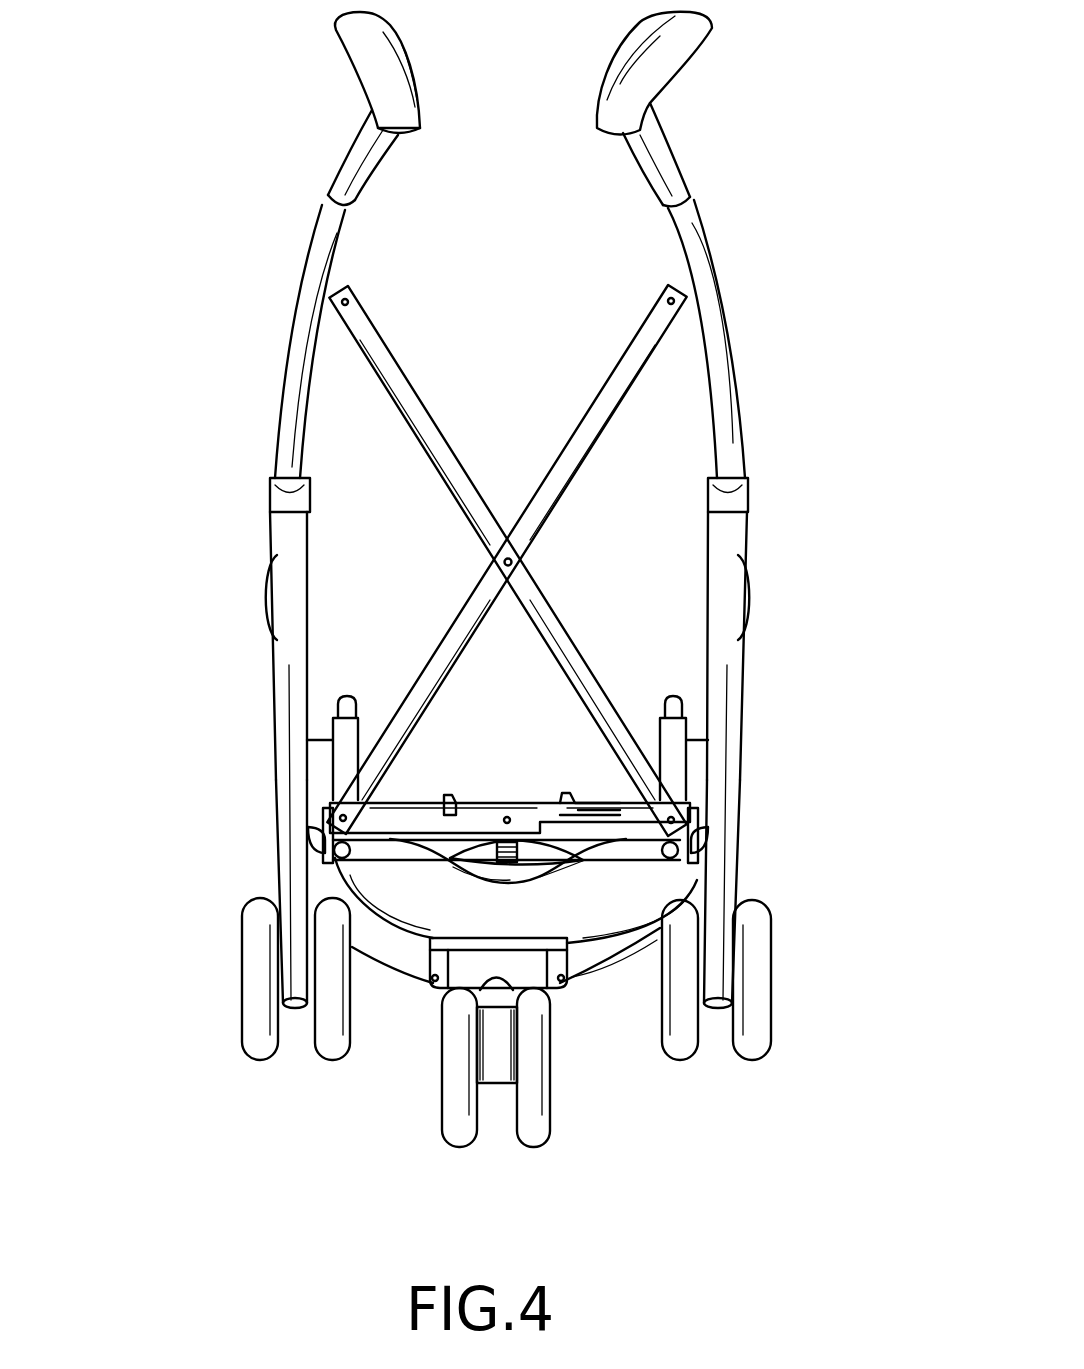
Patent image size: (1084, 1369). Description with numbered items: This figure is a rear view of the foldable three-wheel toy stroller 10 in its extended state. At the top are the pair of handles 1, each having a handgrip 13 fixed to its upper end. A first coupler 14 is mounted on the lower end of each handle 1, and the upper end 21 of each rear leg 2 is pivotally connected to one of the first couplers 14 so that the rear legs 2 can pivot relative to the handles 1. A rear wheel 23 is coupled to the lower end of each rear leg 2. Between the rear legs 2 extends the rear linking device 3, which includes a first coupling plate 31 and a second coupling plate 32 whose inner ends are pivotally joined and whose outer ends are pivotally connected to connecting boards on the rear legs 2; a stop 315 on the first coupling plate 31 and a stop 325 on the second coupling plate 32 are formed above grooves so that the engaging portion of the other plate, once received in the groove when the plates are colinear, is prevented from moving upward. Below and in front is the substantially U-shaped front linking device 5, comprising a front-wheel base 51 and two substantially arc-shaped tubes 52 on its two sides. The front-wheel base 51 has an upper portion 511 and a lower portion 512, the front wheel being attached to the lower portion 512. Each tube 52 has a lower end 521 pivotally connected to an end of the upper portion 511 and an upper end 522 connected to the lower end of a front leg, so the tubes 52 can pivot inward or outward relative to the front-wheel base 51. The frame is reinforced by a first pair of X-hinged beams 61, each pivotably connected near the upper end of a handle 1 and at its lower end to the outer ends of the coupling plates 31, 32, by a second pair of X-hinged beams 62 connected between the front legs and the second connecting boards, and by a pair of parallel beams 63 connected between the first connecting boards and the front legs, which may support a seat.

The foldable three-wheel stroller 10 is at (245, 1150).
The handle 1 is at (712, 262).
The handgrip 13 is at (365, 50).
The first coupler 14 is at (745, 483).
The rear leg 2 is at (722, 695).
The upper end of rear leg 21 is at (730, 521).
The rear wheel 23 is at (262, 923).
The rear linking device 3 is at (527, 778).
The first coupling plate 31 is at (700, 836).
The second coupling plate 32 is at (390, 818).
The stop 315 is at (447, 800).
The stop 325 is at (580, 790).
The front linking device 5 is at (611, 1018).
The front-wheel base 51 is at (492, 988).
The upper portion of front-wheel base 511 is at (535, 968).
The lower portion of front-wheel base 512 is at (498, 1055).
The arc-shaped tube 52 is at (627, 947).
The lower end of tube 521 is at (418, 972).
The upper end of tube 522 is at (318, 872).
The first pair of X-hinged beams 61 is at (440, 428).
The second pair of X-hinged beams 62 is at (370, 855).
The parallel beam 63 is at (330, 740).